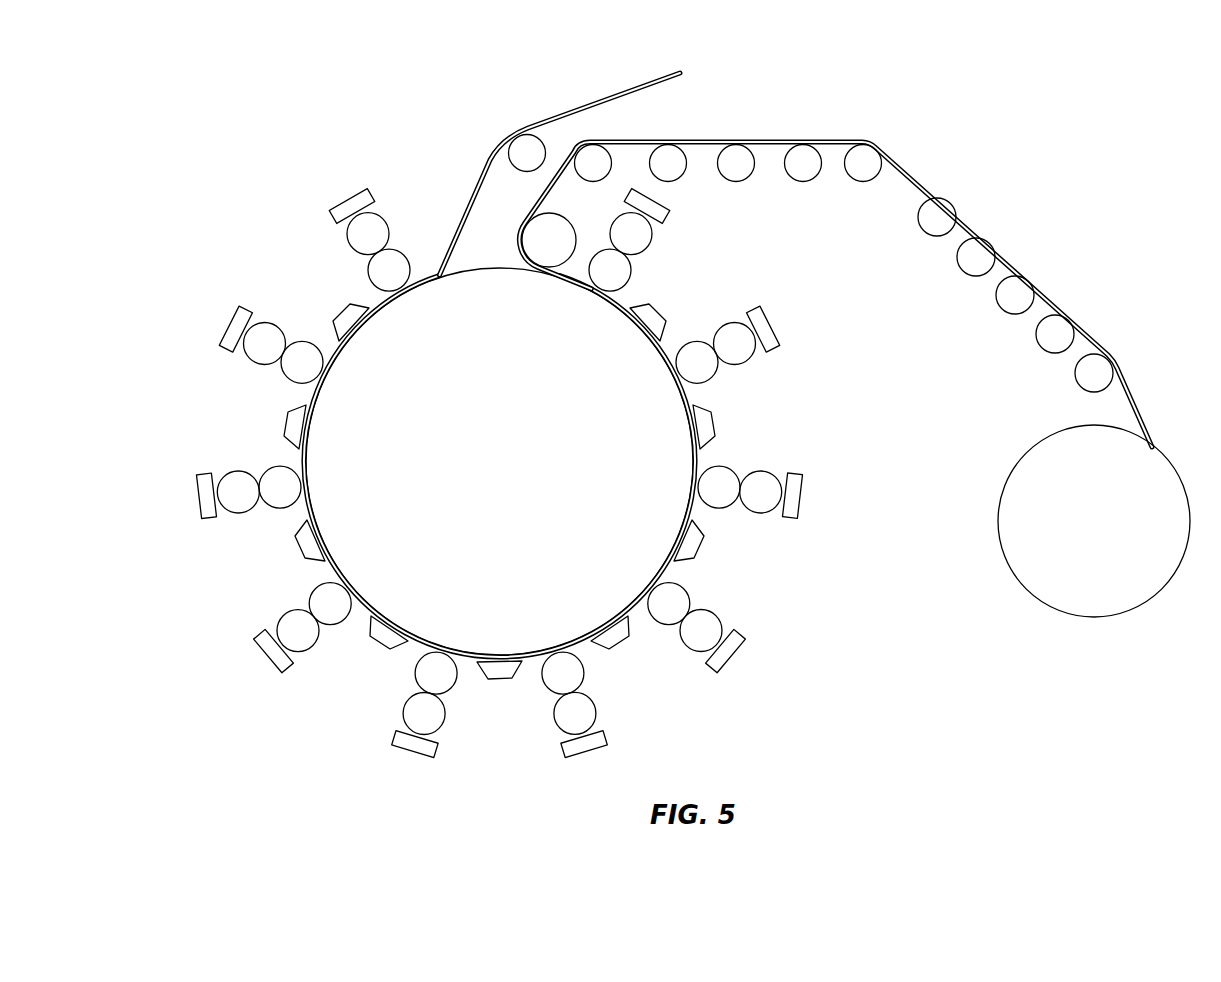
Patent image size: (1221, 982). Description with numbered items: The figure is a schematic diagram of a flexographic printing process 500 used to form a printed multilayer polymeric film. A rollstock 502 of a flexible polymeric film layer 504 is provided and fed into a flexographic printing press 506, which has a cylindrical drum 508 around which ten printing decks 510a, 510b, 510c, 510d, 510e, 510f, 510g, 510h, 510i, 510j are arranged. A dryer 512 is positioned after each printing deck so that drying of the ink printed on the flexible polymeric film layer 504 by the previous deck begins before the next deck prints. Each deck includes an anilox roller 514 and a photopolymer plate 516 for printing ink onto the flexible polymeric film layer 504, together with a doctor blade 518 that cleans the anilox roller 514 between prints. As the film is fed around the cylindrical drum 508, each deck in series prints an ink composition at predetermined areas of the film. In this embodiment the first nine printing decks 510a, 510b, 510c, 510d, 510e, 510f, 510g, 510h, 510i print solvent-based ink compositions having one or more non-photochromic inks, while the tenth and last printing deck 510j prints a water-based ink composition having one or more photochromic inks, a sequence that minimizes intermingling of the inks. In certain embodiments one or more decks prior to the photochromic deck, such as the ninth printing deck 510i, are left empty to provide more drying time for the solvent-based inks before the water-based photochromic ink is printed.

The flexographic printing process 500 is at (212, 102).
The rollstock 502 is at (1094, 521).
The flexible polymeric film layer 504 is at (1138, 408).
The flexographic printing press 506 is at (452, 172).
The cylindrical drum 508 is at (499, 462).
The first printing deck 510a is at (670, 247).
The second printing deck 510b is at (729, 303).
The third printing deck 510c is at (772, 463).
The fourth printing deck 510d is at (737, 606).
The fifth printing deck 510e is at (632, 713).
The sixth printing deck 510f is at (400, 762).
The seventh printing deck 510g is at (261, 610).
The eighth printing deck 510h is at (232, 466).
The ninth printing deck 510i is at (236, 366).
The tenth printing deck 510j is at (328, 236).
The dryer 512 is at (500, 496).
The anilox roller 514 is at (499, 474).
The photopolymer plate 516 is at (499, 471).
The doctor blade 518 is at (499, 464).